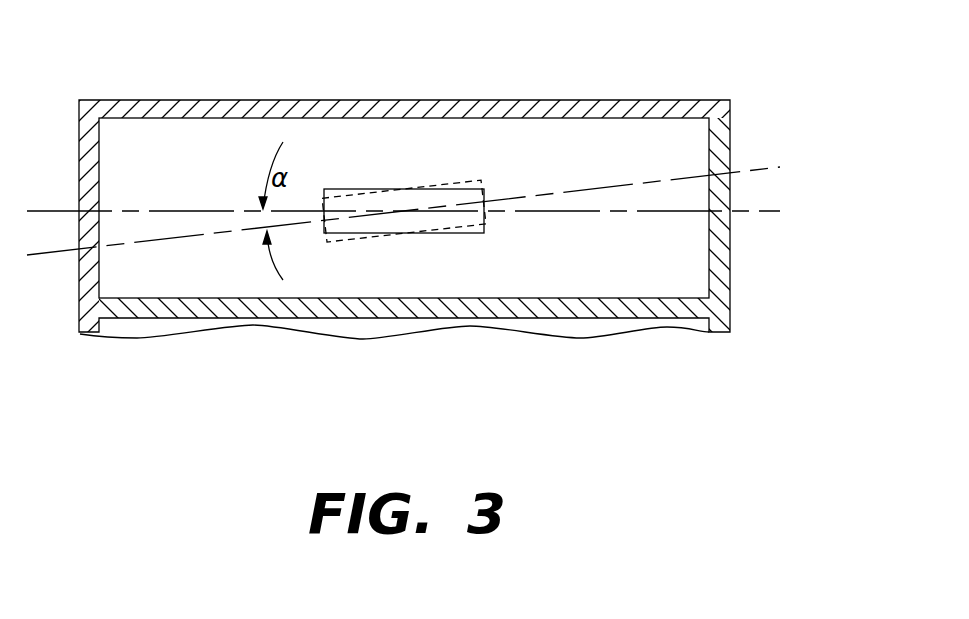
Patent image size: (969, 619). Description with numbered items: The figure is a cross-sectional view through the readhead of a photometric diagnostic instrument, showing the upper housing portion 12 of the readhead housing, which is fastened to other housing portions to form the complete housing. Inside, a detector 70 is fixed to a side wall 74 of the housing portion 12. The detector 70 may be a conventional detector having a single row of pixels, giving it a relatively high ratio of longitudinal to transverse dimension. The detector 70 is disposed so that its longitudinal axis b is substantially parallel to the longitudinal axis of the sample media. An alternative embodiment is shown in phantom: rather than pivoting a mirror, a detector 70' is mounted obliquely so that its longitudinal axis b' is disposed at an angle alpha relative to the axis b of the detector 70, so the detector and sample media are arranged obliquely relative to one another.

The upper housing portion 12 is at (669, 100).
The detector 70 is at (404, 132).
The detector 70' is at (423, 136).
The side wall 74 is at (608, 274).
The longitudinal axis b is at (431, 244).
The longitudinal axis b' is at (436, 184).